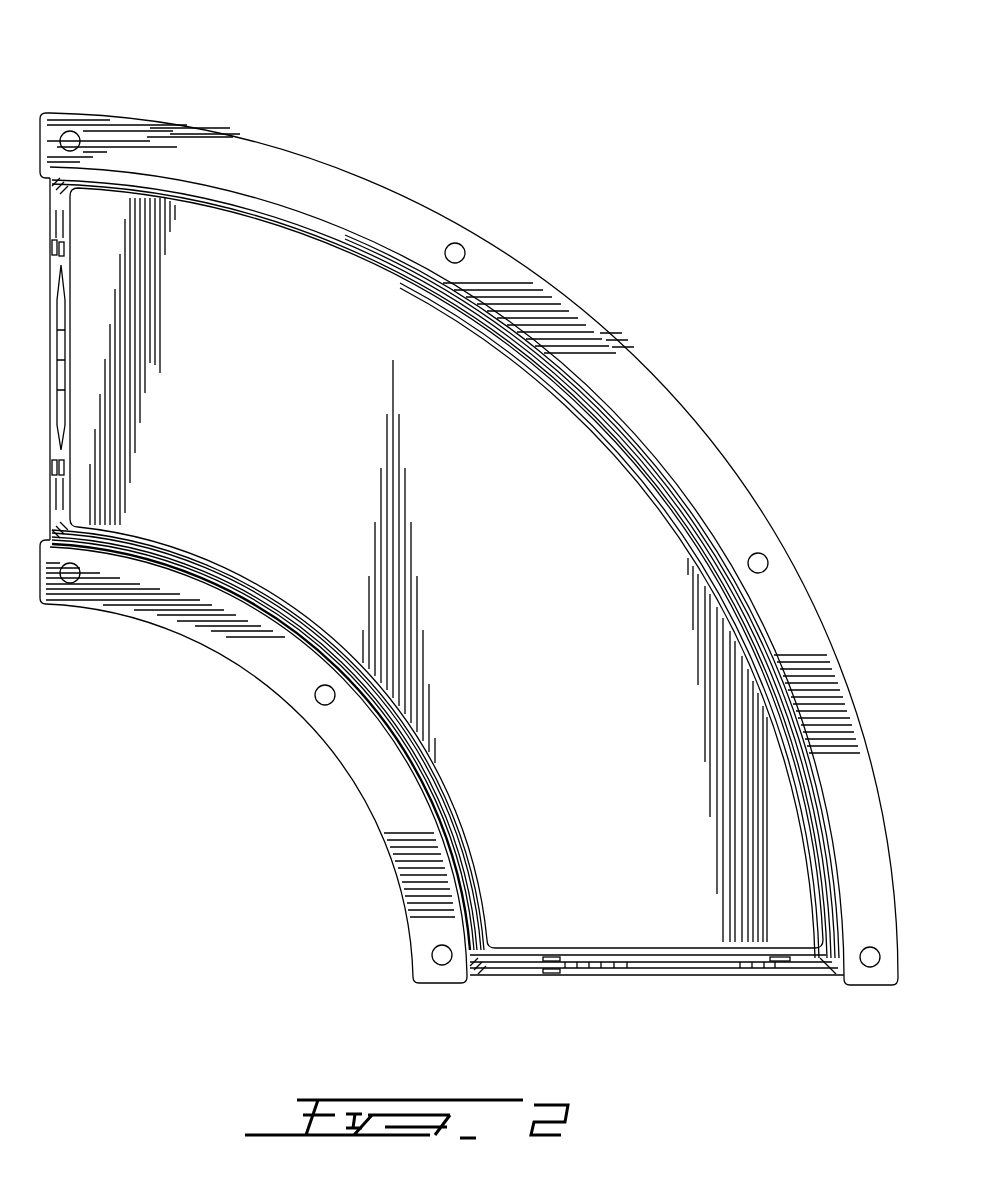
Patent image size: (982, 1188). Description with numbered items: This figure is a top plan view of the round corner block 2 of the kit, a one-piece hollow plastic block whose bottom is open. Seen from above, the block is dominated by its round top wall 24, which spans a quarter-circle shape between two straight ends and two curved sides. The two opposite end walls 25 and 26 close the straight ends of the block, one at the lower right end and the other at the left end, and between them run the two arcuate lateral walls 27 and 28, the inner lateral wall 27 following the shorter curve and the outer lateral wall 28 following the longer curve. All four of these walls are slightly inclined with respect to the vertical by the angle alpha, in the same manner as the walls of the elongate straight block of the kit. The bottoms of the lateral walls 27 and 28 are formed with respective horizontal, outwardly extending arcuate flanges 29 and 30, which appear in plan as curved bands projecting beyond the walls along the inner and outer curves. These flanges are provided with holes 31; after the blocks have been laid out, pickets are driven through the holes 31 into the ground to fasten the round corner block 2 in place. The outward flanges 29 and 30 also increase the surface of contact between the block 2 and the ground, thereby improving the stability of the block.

The round corner block 2 is at (245, 108).
The round top wall 24 is at (373, 293).
The end wall 25 is at (564, 971).
The end wall 26 is at (62, 264).
The arcuate lateral wall 27 is at (408, 740).
The arcuate lateral wall 28 is at (650, 472).
The arcuate flange 29 is at (180, 613).
The arcuate flange 30 is at (632, 378).
The holes 31 is at (69, 138).